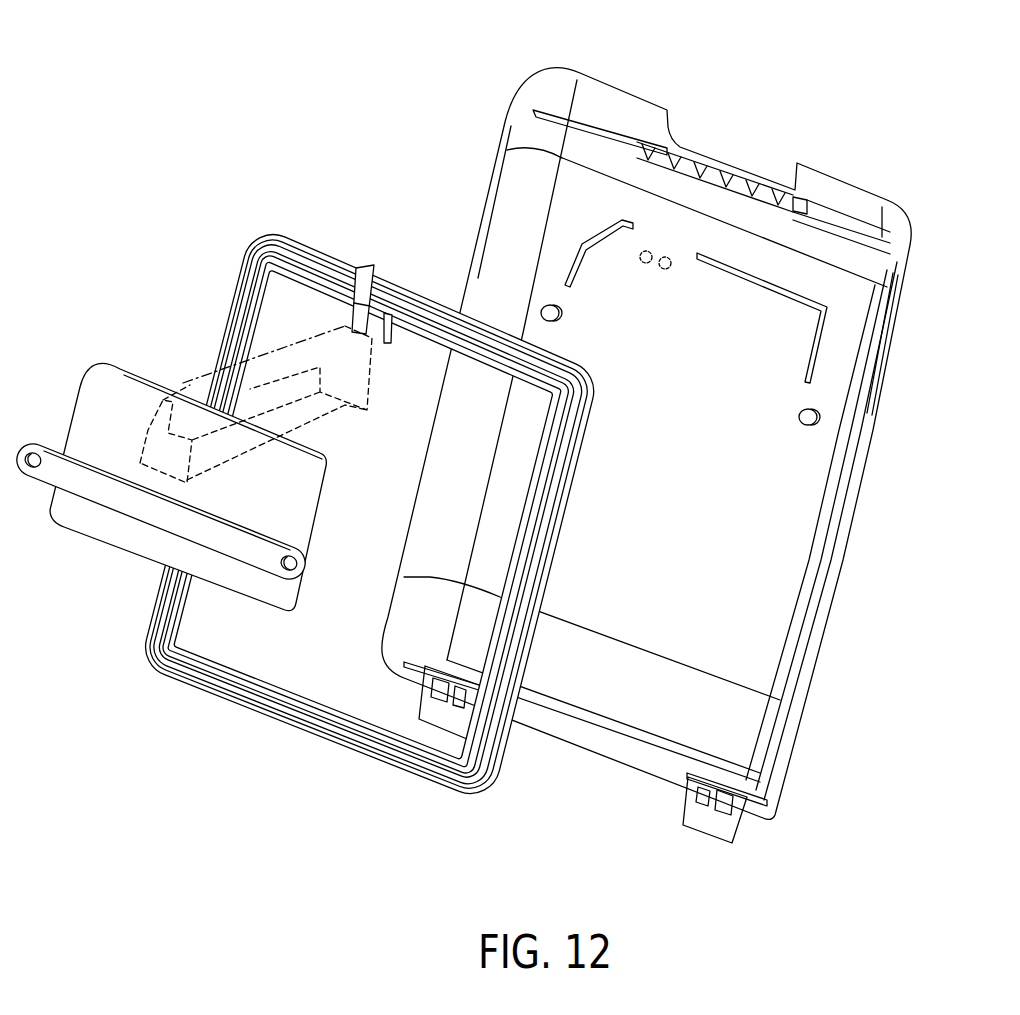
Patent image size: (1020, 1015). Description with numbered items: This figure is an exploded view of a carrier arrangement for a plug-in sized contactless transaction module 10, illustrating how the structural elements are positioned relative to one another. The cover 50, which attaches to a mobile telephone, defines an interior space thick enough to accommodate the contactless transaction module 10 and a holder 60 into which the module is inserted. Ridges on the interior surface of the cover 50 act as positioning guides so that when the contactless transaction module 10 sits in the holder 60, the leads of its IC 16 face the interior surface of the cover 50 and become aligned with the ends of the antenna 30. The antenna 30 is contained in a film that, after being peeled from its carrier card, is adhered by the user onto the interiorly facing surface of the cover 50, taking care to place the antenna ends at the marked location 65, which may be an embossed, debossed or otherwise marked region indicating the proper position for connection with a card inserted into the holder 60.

The contactless transaction module 10 is at (100, 384).
The IC 16 is at (362, 418).
The antenna 30 is at (292, 225).
The cover 50 is at (603, 109).
The holder 60 is at (679, 383).
The marked location 65 is at (650, 281).